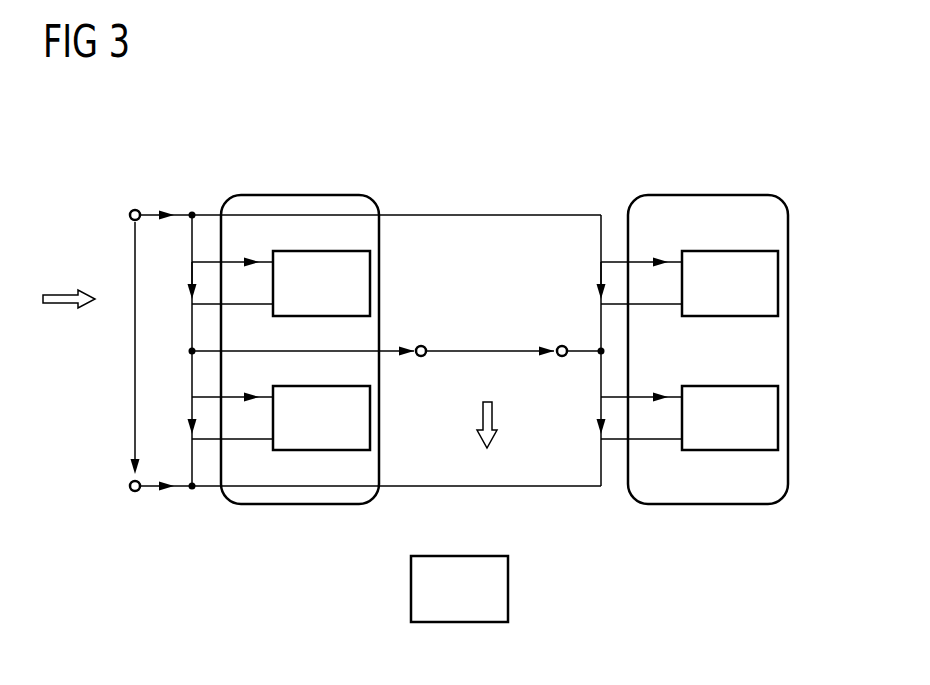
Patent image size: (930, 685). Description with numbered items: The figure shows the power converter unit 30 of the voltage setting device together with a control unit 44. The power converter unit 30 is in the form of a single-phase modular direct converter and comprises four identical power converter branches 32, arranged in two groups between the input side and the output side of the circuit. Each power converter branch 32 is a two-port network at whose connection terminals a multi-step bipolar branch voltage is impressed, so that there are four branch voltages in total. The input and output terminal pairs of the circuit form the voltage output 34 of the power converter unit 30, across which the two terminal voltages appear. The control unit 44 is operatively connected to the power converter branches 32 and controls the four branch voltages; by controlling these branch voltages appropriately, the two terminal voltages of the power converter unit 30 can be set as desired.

The power converter unit 30 is at (572, 112).
The power converter branch 32 is at (317, 250).
The voltage output 34 is at (146, 174).
The control unit 44 is at (508, 588).